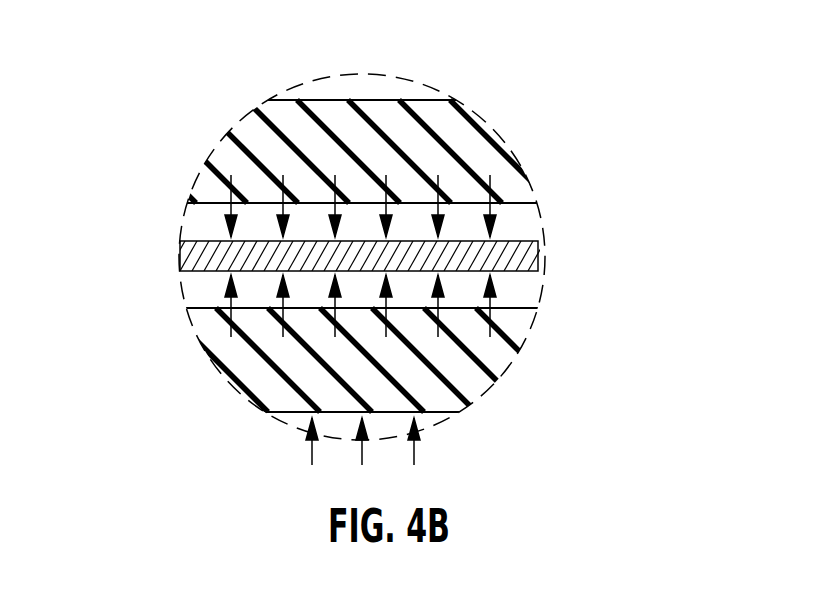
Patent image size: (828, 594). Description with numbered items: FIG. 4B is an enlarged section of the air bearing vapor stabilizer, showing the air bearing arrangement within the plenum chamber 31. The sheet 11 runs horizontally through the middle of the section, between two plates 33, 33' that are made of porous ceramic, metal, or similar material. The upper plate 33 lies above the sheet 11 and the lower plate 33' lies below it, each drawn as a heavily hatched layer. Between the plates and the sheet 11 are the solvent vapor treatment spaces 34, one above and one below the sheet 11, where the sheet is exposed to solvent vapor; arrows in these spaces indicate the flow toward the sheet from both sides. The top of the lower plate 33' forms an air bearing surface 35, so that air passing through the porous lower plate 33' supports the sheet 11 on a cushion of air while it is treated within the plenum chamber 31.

The plenum chamber 31 is at (383, 88).
The plate 33 is at (348, 138).
The lower plate 33' is at (358, 365).
The sheet 11 is at (527, 260).
The solvent vapor treatment spaces 34 is at (203, 222).
The air bearing surface 35 is at (505, 307).